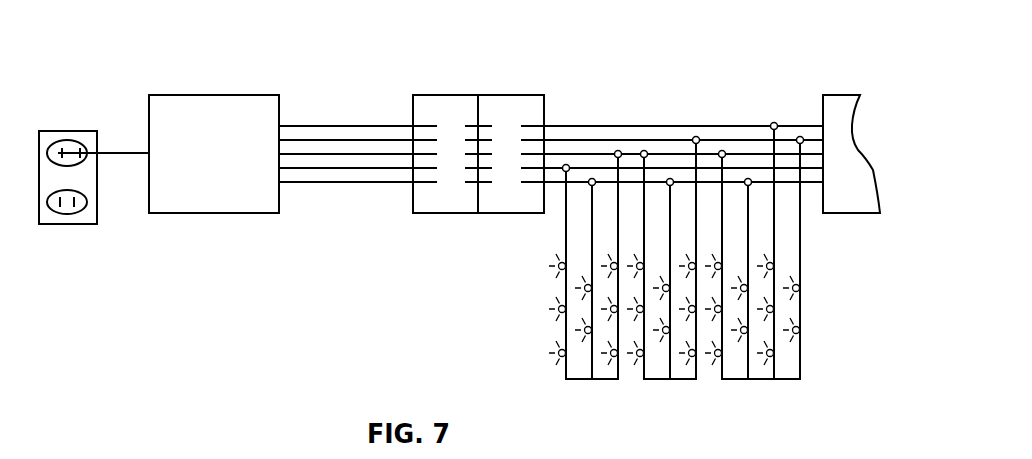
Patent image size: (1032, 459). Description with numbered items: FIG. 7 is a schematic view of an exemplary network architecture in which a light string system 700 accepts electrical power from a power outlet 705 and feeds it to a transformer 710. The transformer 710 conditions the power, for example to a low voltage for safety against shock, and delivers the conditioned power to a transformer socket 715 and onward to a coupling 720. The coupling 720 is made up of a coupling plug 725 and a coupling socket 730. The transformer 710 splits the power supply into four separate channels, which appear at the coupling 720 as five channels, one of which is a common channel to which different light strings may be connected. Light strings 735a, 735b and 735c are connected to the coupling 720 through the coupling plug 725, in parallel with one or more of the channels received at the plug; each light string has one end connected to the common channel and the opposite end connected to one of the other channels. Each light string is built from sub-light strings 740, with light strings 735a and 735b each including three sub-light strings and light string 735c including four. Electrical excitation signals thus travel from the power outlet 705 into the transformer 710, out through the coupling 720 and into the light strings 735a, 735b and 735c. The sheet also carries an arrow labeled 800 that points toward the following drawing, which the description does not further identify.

The light string system 700 is at (116, 70).
The power outlet 705 is at (68, 225).
The transformer 710 is at (211, 213).
The transformer socket 715 is at (442, 94).
The coupling 720 is at (863, 88).
The coupling plug 725 is at (505, 203).
The coupling socket 730 is at (850, 215).
The light string 735a is at (580, 383).
The light string 735b is at (657, 382).
The light string 735c is at (800, 358).
The sub-light string 740 is at (555, 313).
The next figure indicator 800 is at (118, 442).